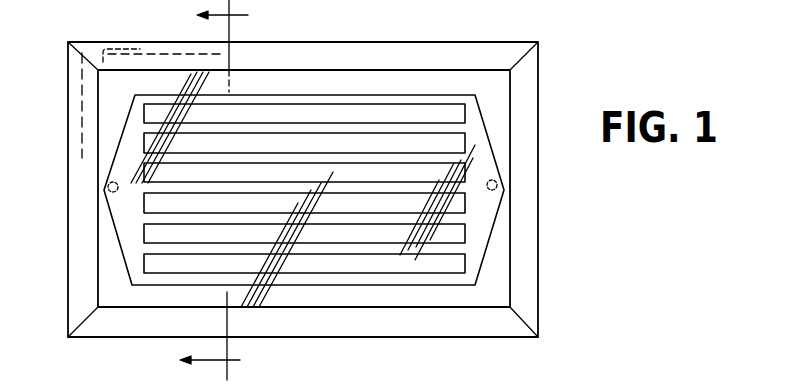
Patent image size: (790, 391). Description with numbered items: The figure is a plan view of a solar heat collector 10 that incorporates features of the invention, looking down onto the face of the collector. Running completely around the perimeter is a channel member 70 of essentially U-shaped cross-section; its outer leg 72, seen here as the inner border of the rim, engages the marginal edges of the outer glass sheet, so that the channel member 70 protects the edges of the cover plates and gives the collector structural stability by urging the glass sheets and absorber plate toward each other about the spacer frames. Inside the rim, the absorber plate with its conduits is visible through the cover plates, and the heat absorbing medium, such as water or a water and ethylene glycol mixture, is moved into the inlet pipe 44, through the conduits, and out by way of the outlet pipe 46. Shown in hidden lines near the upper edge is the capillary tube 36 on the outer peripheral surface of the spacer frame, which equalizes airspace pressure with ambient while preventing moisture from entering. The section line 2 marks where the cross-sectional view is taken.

The solar heat collector 10 is at (340, 172).
The channel member 70 is at (541, 311).
The outer leg 72 is at (530, 245).
The capillary tube 36 is at (132, 45).
The inlet pipe 44 is at (499, 176).
The outlet pipe 46 is at (110, 201).
The section line 2- 2 is at (226, 190).